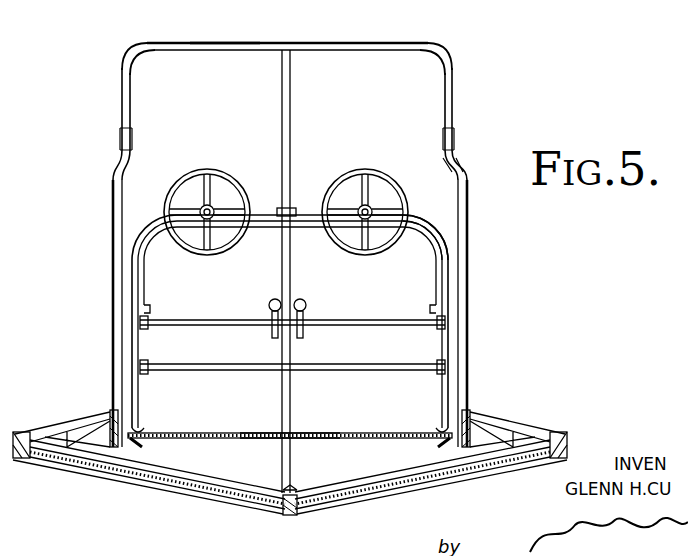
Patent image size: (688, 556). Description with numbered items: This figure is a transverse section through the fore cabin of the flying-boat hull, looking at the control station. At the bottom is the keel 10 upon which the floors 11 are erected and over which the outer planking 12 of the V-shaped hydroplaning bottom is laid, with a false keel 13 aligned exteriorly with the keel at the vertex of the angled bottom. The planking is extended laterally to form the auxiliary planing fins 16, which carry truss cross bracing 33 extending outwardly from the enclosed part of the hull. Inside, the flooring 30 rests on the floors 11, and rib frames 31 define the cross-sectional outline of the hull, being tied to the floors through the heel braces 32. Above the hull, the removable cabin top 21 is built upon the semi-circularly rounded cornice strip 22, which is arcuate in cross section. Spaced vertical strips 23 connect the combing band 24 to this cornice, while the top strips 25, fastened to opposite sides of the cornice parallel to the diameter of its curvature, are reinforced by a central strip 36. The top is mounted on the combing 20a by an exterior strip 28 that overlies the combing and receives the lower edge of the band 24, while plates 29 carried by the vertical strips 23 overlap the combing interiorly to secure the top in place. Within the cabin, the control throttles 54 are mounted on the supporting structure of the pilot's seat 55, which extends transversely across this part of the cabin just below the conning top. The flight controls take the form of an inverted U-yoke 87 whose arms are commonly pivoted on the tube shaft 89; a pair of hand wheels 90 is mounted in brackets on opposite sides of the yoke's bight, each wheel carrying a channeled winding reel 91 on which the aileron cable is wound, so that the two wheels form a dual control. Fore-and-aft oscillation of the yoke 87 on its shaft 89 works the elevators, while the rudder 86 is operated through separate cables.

The keel 10 is at (297, 492).
The floors 11 is at (290, 471).
The outer planking 12 is at (137, 482).
The false keel 13 is at (290, 517).
The auxiliary planing fins 16 is at (45, 433).
The combing 20a is at (120, 169).
The cabin top 21 is at (319, 50).
The cornice strip 22 is at (128, 58).
The vertical strips 23 is at (129, 93).
The combing band 24 is at (130, 162).
The top strips 25 is at (208, 53).
The exterior strip 28 is at (453, 162).
The plates 29 is at (125, 141).
The flooring 30 is at (328, 433).
The rib frames 31 is at (283, 323).
The heel braces 32 is at (290, 423).
The truss cross bracing 33 is at (83, 466).
The central strip 36 is at (290, 136).
The control throttles 54 is at (299, 298).
The pilot's seat 55 is at (213, 320).
The rudder 86 is at (428, 243).
The U-yoke 87 is at (435, 273).
The tube shaft 89 is at (395, 365).
The hand wheels 90 is at (298, 200).
The channeled winding reel 91 is at (213, 203).